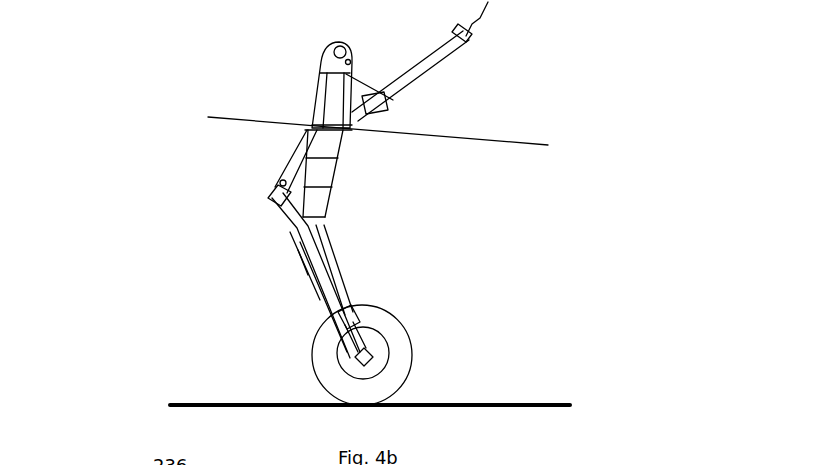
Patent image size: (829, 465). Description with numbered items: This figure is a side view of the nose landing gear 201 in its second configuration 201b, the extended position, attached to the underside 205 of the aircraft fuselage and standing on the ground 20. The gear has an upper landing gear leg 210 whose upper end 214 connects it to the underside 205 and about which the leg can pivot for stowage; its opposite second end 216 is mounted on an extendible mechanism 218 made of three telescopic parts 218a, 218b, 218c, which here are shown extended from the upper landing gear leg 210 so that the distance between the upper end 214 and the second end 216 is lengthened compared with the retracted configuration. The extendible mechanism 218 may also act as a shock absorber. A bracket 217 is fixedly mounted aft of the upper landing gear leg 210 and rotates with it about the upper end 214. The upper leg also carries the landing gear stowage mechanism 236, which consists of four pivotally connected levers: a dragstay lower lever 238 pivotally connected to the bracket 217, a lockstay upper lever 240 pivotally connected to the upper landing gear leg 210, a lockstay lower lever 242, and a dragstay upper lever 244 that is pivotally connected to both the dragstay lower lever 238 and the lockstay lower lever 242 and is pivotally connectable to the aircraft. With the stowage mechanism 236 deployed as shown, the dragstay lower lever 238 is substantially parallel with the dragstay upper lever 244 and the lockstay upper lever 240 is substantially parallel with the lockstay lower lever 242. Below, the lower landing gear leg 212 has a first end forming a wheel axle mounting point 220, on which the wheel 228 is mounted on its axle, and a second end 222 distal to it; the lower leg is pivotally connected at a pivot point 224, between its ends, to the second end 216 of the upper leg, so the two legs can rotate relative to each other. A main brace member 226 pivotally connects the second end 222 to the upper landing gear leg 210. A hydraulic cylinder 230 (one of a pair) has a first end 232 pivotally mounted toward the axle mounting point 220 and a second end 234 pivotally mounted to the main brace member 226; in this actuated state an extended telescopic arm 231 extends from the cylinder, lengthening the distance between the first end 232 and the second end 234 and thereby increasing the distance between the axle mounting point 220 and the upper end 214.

The ground 20 is at (177, 402).
The nose landing gear 201 is at (133, 222).
The second configuration 201b is at (103, 128).
The underside of the fuselage 205 is at (545, 143).
The upper landing gear leg 210 is at (318, 80).
The lower landing gear leg 212 is at (322, 305).
The upper end 214 is at (337, 50).
The second end 216 is at (302, 255).
The bracket 217 is at (350, 125).
The extendible mechanism 218 is at (401, 182).
The telescopic part 218a is at (338, 155).
The telescopic part 218b is at (318, 182).
The telescopic part 218c is at (327, 217).
The wheel axle mounting point 220 is at (368, 360).
The second end 222 is at (268, 204).
The pivot point 224 is at (322, 302).
The main brace member 226 is at (290, 170).
The wheel 228 is at (407, 322).
The hydraulic cylinder 230 is at (297, 238).
The extended telescopic arm 231 is at (338, 275).
The first end 232 is at (355, 312).
The second end 234 is at (282, 186).
The landing gear stowage mechanism 236 is at (504, 82).
The dragstay lower lever 238 is at (376, 100).
The lockstay upper lever 240 is at (360, 75).
The lockstay lower lever 242 is at (380, 83).
The dragstay upper lever 244 is at (420, 58).